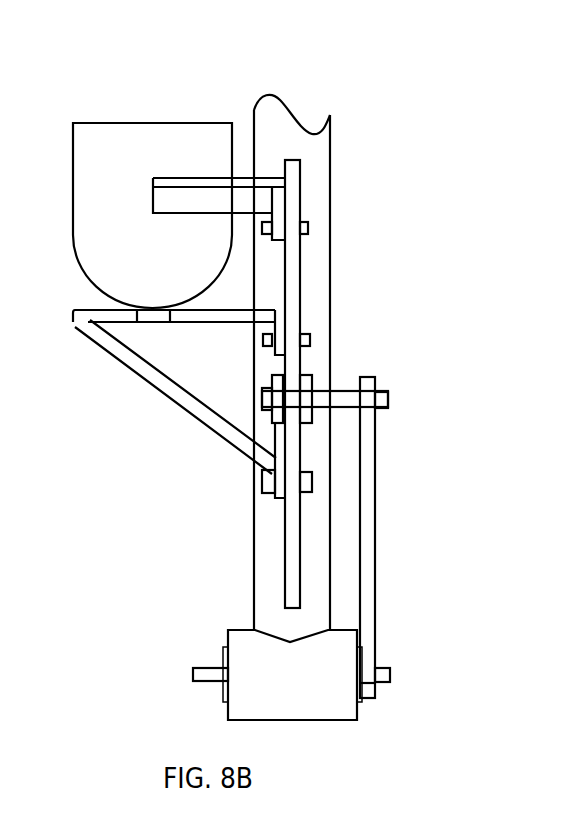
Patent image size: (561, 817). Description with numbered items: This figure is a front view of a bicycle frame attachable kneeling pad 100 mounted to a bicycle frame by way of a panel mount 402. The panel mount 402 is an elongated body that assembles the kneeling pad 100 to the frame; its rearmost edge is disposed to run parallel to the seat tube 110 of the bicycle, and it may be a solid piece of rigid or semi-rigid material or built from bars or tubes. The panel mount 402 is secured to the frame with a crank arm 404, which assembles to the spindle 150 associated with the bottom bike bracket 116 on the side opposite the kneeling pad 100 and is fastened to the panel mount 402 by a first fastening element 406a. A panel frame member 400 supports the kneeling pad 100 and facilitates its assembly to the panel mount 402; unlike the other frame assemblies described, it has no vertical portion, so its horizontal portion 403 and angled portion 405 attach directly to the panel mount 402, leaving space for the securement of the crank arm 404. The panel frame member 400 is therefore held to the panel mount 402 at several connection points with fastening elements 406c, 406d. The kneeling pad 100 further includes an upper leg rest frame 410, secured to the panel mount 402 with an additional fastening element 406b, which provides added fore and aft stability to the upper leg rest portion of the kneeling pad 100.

The kneeling pad 100 is at (103, 76).
The seat tube 110 is at (330, 158).
The bottom bike bracket 116 is at (228, 630).
The spindle 150 is at (195, 673).
The panel frame member 400 is at (114, 399).
The panel mount 402 is at (300, 280).
The horizontal portion 403 is at (220, 325).
The crank arm 404 is at (375, 490).
The angled portion 405 is at (178, 402).
The first fastening element 406a is at (388, 395).
The additional fastening element 406b is at (308, 228).
The fastening element 406c is at (303, 337).
The fastening element 406d is at (262, 480).
The upper leg rest frame 410 is at (173, 178).